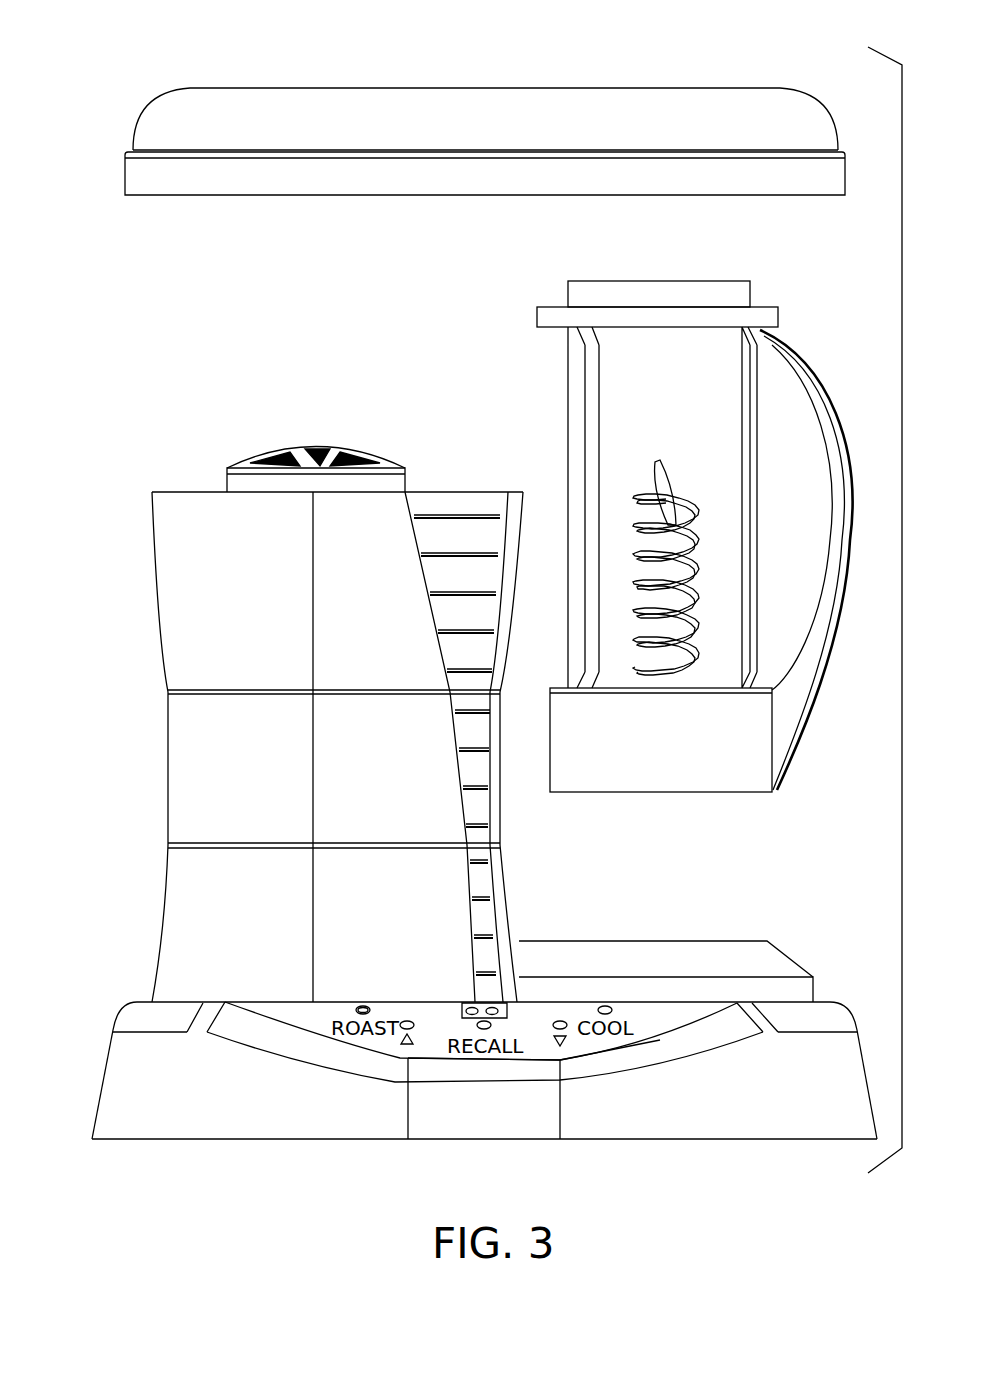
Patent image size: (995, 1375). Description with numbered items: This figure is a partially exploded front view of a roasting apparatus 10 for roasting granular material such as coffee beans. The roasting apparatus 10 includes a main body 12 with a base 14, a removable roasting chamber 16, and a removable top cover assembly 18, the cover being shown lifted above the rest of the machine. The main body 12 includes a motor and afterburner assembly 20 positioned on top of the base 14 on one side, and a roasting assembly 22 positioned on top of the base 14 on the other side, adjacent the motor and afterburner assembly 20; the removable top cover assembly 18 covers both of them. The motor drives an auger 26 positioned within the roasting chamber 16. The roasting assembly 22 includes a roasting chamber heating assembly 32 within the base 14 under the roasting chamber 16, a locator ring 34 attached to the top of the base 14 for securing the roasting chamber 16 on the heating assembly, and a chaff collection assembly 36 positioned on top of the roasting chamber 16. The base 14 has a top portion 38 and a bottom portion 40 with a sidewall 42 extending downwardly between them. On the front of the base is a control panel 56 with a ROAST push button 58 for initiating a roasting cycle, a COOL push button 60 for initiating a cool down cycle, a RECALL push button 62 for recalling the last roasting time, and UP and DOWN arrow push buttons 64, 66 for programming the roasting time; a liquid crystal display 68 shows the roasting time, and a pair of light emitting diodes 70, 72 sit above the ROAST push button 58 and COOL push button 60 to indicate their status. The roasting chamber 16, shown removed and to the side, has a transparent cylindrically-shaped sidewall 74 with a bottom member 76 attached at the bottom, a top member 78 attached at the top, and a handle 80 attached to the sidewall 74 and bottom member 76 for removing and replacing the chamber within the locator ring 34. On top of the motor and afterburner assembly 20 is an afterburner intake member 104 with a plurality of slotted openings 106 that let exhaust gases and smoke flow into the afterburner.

The roasting apparatus 10 is at (296, 42).
The main body 12 is at (168, 766).
The base 14 is at (865, 1088).
The removable roasting chamber 16 is at (568, 390).
The removable top cover assembly 18 is at (598, 88).
The motor and afterburner assembly 20 is at (448, 492).
The roasting assembly 22 is at (681, 537).
The auger 26 is at (663, 476).
The roasting chamber heating assembly 32 is at (815, 990).
The locator ring 34 is at (785, 960).
The chaff collection assembly 36 is at (660, 281).
The top portion 38 is at (125, 1010).
The bottom portion 40 is at (245, 1140).
The sidewall 42 is at (100, 1085).
The control panel 56 is at (510, 1020).
The ROAST push button 58 is at (356, 1010).
The COOL push button 60 is at (612, 1008).
The RECALL push button 62 is at (460, 1012).
The UP arrow push button 64 is at (412, 1026).
The DOWN arrow push button 66 is at (562, 1020).
The liquid crystal display 68 is at (488, 1028).
The light emitting diode 70 is at (363, 1006).
The light emitting diode 72 is at (605, 1005).
The sidewall 74 is at (693, 398).
The bottom member 76 is at (660, 792).
The top member 78 is at (537, 318).
The handle 80 is at (840, 452).
The afterburner intake member 104 is at (227, 480).
The slotted openings 106 is at (285, 450).